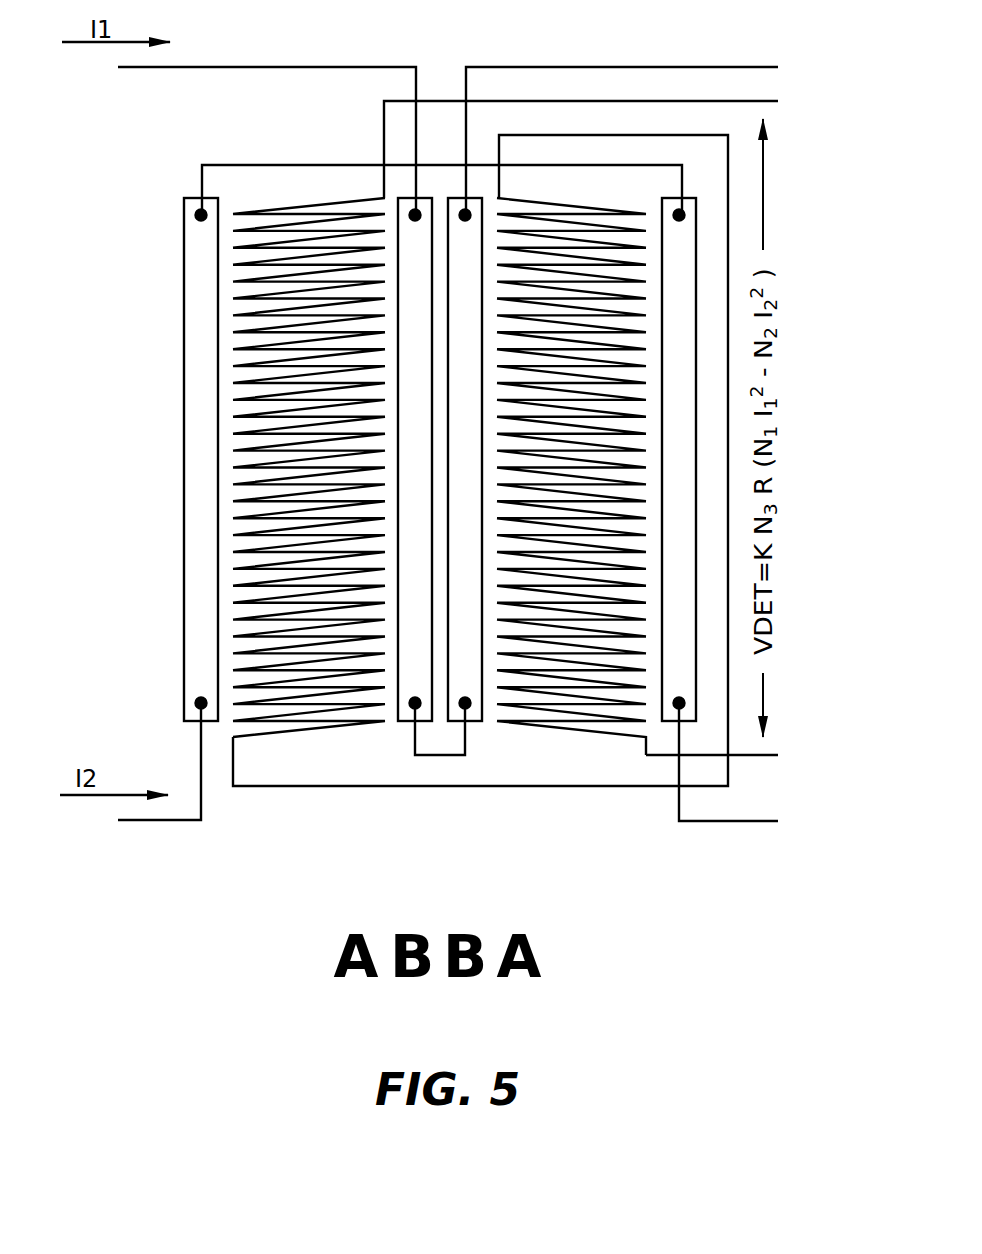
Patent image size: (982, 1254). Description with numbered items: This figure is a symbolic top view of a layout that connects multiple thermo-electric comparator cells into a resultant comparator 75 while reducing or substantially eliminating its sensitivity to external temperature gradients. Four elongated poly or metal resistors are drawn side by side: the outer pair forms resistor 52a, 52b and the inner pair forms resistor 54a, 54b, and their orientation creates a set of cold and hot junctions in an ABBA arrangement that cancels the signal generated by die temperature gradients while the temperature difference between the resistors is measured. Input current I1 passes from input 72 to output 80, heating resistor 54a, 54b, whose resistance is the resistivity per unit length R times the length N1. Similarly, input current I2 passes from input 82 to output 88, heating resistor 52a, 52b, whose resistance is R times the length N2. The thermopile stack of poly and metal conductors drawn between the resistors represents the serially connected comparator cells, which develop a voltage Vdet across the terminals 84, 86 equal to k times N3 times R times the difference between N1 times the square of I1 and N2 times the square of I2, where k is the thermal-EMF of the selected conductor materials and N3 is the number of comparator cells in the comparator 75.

The input 72 is at (146, 67).
The output 80 is at (755, 68).
The terminal 84 is at (603, 143).
The terminal 86 is at (733, 758).
The input 82 is at (142, 820).
The output 88 is at (752, 821).
The resistor 52a is at (184, 682).
The resistor 52b is at (697, 682).
The resistor 54a is at (410, 738).
The resistor 54b is at (472, 738).
The comparator 75 is at (634, 824).